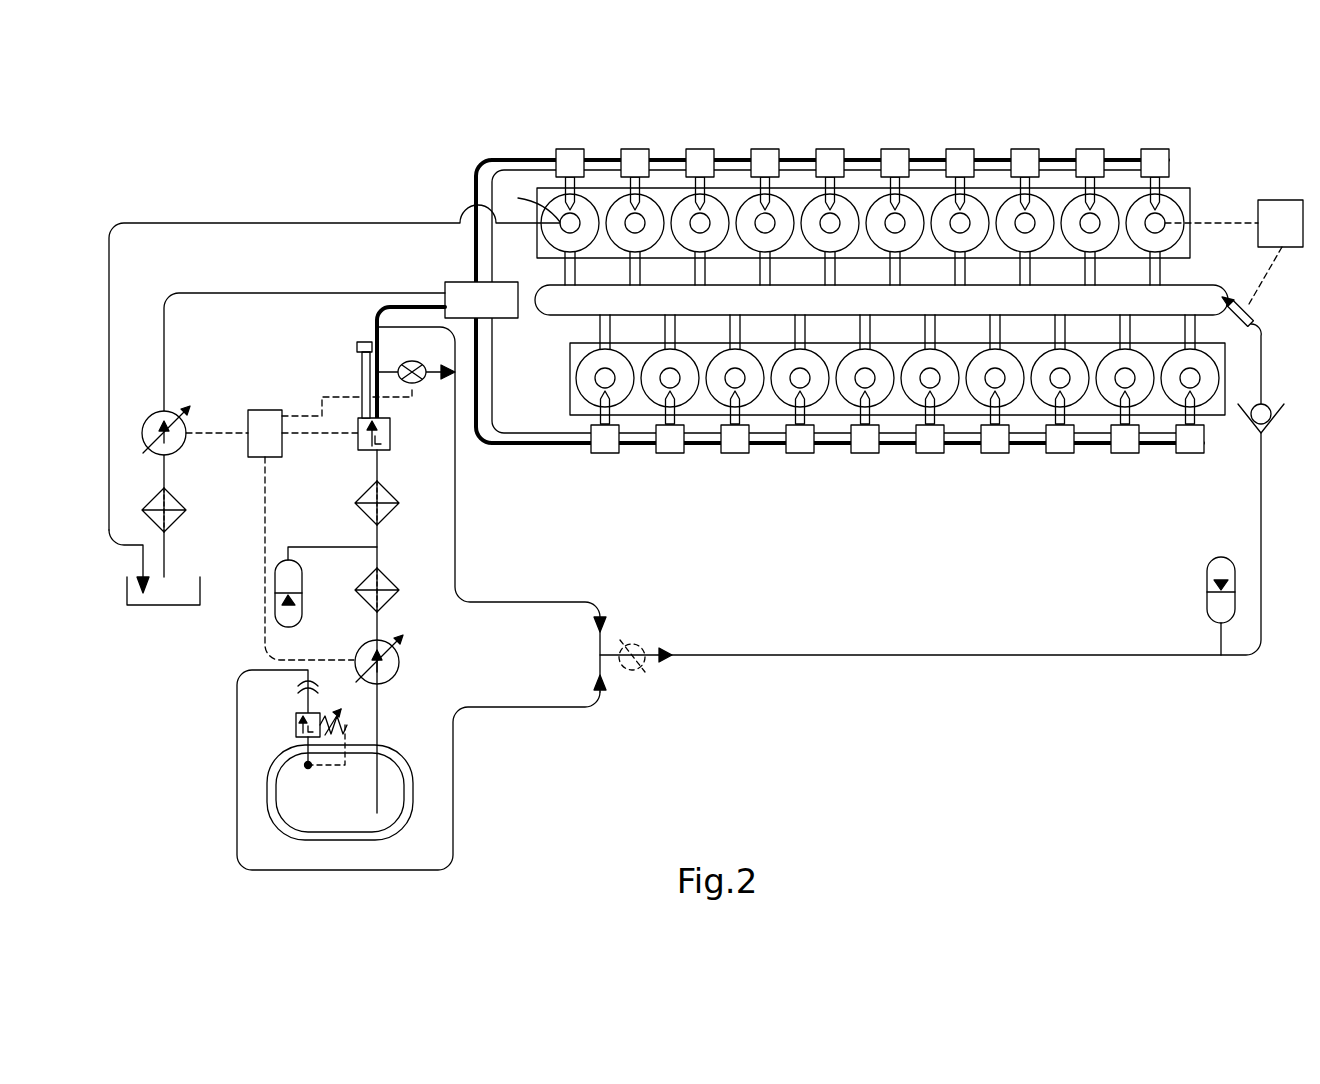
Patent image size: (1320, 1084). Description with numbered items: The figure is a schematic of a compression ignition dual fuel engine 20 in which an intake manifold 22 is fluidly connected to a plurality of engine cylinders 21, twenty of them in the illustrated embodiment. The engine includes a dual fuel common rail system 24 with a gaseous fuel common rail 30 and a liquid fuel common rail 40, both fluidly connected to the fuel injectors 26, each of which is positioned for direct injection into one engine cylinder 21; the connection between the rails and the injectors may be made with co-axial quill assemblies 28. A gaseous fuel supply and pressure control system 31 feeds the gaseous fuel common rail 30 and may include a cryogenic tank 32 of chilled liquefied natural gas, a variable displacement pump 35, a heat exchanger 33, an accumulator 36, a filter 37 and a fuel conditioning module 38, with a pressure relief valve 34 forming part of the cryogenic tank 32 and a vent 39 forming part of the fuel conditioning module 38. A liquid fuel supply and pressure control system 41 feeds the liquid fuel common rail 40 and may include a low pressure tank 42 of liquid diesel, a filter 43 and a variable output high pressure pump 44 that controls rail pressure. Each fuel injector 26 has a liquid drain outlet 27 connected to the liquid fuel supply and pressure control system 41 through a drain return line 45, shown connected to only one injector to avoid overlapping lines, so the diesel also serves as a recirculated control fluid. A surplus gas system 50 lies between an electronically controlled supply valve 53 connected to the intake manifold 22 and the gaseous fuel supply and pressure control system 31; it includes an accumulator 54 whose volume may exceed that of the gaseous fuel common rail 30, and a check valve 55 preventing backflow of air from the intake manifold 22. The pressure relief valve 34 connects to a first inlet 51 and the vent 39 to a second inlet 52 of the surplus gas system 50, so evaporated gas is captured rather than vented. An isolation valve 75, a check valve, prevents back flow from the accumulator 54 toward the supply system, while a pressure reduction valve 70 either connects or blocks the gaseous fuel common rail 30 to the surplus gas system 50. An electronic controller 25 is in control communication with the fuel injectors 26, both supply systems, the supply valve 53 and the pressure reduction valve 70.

The compression ignition dual fuel engine 20 is at (512, 357).
The engine cylinder 21 is at (548, 240).
The intake manifold 22 is at (1211, 285).
The dual fuel common rail system 24 is at (806, 124).
The electronic controller 25 is at (1283, 200).
The fuel injector 26 is at (578, 214).
The liquid drain outlet 27 is at (527, 201).
The co-axial quill assembly 28 is at (708, 184).
The gaseous fuel common rail 30 is at (514, 159).
The gaseous fuel supply and pressure control system 31 is at (226, 649).
The cryogenic tank 32 is at (400, 744).
The heat exchanger 33 is at (398, 587).
The pressure relief valve 34 is at (296, 726).
The variable displacement pump 35 is at (398, 657).
The accumulator 36 is at (302, 584).
The filter 37 is at (398, 500).
The fuel conditioning module 38 is at (390, 435).
The vent 39 is at (362, 355).
The liquid fuel common rail 40 is at (555, 159).
The liquid fuel supply and pressure control system 41 is at (153, 301).
The low pressure tank 42 is at (167, 606).
The filter 43 is at (186, 507).
The high pressure pump 44 is at (186, 433).
The drain return line 45 is at (320, 223).
The surplus gas system 50 is at (1212, 667).
The first inlet 51 is at (301, 690).
The second inlet 52 is at (357, 342).
The electronically controlled supply valve 53 is at (1242, 299).
The accumulator 54 is at (1207, 576).
The check valve 55 is at (1246, 424).
The pressure reduction valve 70 is at (422, 381).
The isolation valve 75 is at (637, 670).